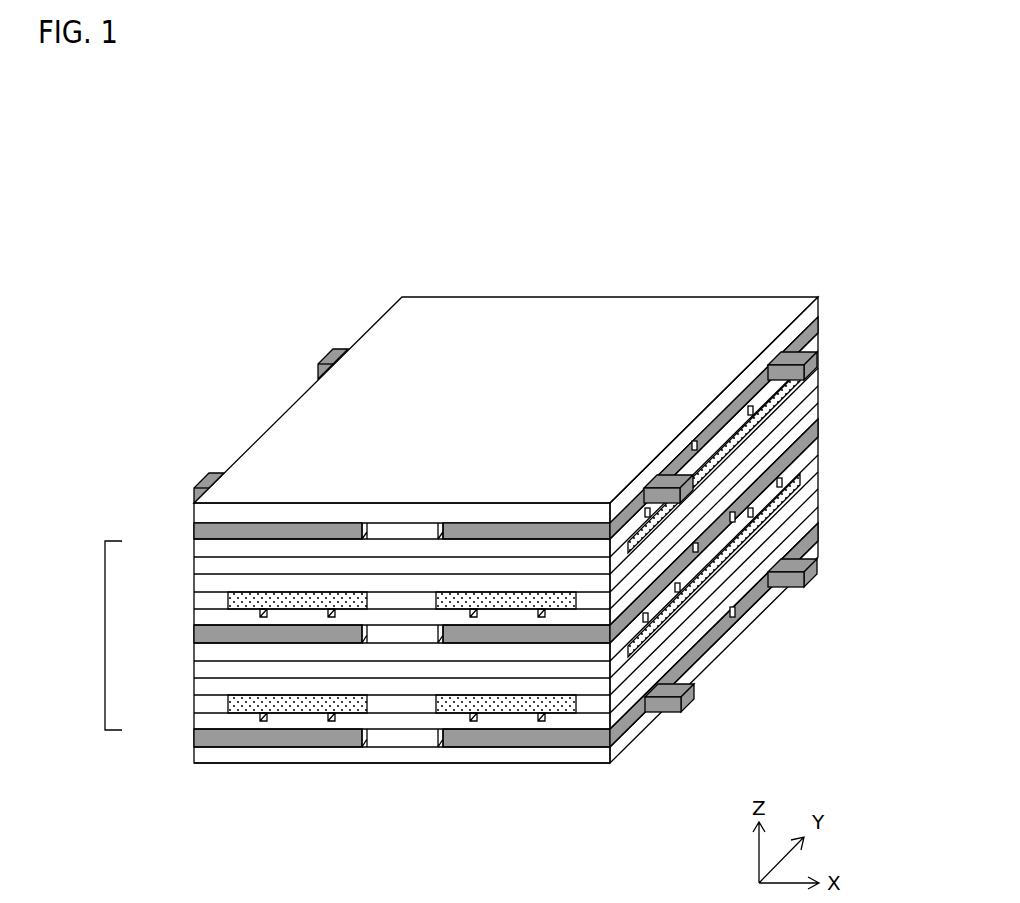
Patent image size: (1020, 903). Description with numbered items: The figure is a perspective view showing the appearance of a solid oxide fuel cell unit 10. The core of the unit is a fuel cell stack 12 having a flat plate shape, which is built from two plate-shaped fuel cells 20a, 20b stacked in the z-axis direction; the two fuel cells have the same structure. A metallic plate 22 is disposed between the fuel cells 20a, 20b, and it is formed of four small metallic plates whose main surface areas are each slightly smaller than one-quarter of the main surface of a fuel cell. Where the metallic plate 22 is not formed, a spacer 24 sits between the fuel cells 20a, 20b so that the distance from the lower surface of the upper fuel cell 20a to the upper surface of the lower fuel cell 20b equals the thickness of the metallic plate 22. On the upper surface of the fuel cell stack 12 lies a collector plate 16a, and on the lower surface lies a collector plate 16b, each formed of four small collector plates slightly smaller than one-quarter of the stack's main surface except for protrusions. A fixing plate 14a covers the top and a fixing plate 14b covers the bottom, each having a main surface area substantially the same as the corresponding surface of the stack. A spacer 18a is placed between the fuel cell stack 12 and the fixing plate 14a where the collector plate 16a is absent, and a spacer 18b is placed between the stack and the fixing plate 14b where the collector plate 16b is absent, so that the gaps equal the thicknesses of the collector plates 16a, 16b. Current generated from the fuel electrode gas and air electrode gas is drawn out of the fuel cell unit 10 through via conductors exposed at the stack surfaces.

The fuel cell unit 10 is at (186, 300).
The fuel cell stack 12 is at (104, 631).
The fixing plate 14a is at (323, 414).
The fixing plate 14b is at (315, 760).
The collector plate 16a is at (180, 536).
The collector plate 16b is at (180, 743).
The spacer 18a is at (730, 418).
The spacer 18b is at (717, 632).
The fuel cell 20a is at (180, 625).
The fuel cell 20b is at (180, 730).
The metallic plate 22 is at (193, 640).
The spacer 24 is at (717, 527).